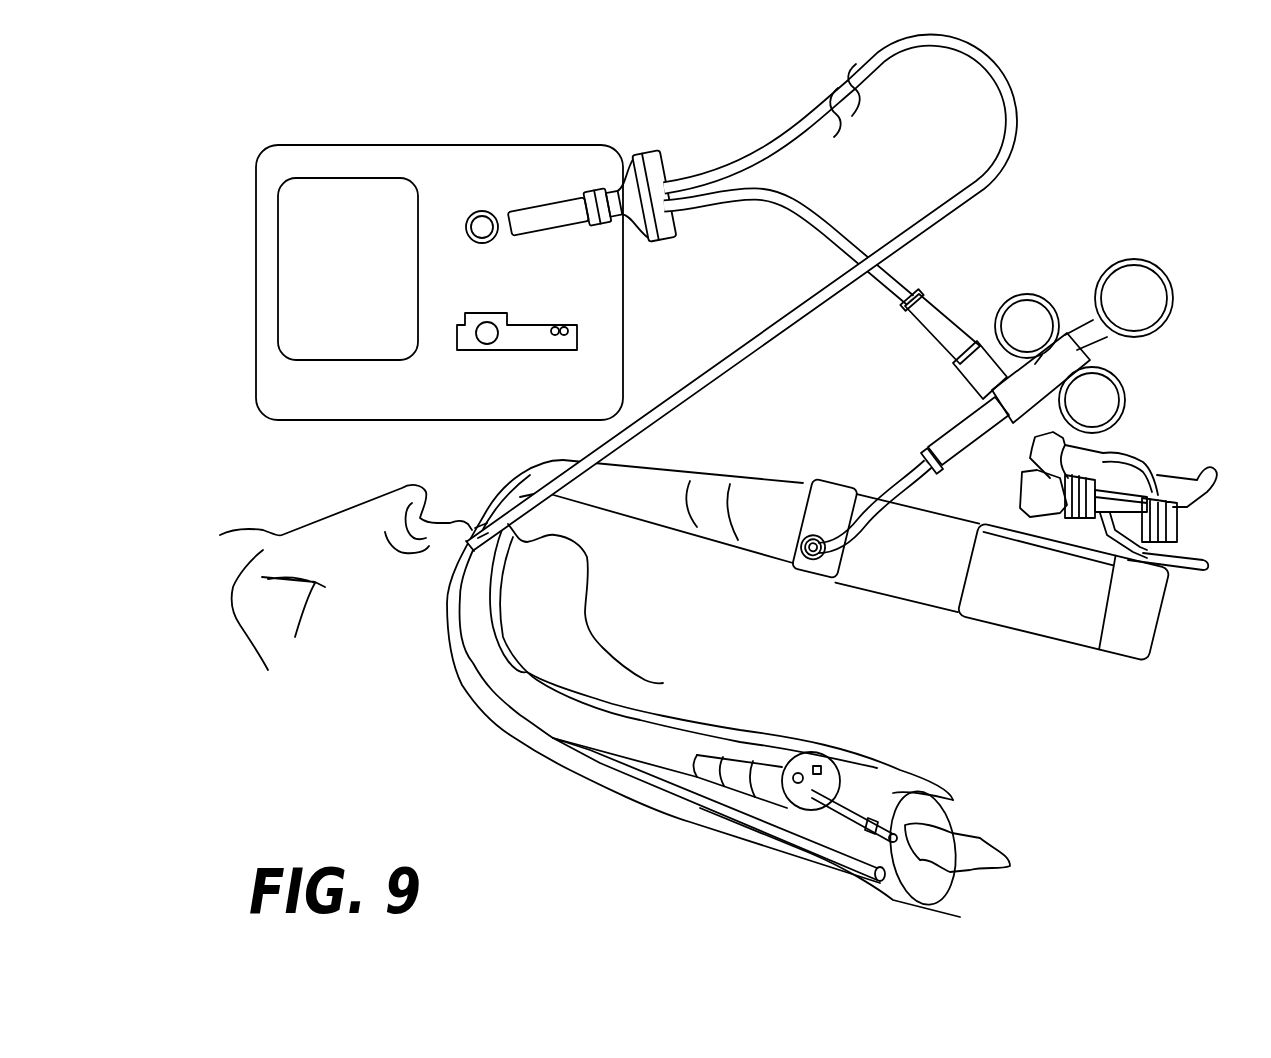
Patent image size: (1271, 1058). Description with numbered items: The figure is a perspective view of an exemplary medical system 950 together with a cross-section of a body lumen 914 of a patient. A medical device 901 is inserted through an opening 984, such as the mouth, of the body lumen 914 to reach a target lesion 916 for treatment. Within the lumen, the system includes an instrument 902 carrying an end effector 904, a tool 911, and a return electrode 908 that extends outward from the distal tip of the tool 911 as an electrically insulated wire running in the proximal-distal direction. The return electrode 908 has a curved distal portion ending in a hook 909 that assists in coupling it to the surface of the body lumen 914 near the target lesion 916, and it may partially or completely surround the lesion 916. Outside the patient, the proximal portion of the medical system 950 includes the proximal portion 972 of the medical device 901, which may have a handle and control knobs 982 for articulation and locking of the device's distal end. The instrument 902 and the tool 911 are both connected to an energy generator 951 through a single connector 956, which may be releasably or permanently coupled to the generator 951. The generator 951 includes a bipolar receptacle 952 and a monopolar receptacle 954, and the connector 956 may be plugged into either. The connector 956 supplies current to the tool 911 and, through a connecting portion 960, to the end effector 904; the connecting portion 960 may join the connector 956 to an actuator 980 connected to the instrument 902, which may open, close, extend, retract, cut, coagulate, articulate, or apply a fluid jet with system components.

The medical system 950 is at (1092, 122).
The energy generator 951 is at (296, 143).
The bipolar receptacle 952 is at (470, 210).
The monopolar receptacle 954 is at (578, 332).
The connector 956 is at (640, 163).
The tool 911 is at (753, 153).
The connecting portion 960 is at (745, 203).
The proximal portion of medical device 972 is at (803, 447).
The actuator 980 is at (956, 403).
The control knobs 982 is at (1153, 444).
The opening 984 is at (466, 503).
The body lumen 914 is at (538, 742).
The medical device 901 is at (769, 748).
The instrument 902 is at (875, 790).
The end effector 904 is at (922, 802).
The return electrode 908 is at (950, 813).
The hook 909 is at (928, 806).
The target lesion 916 is at (980, 843).